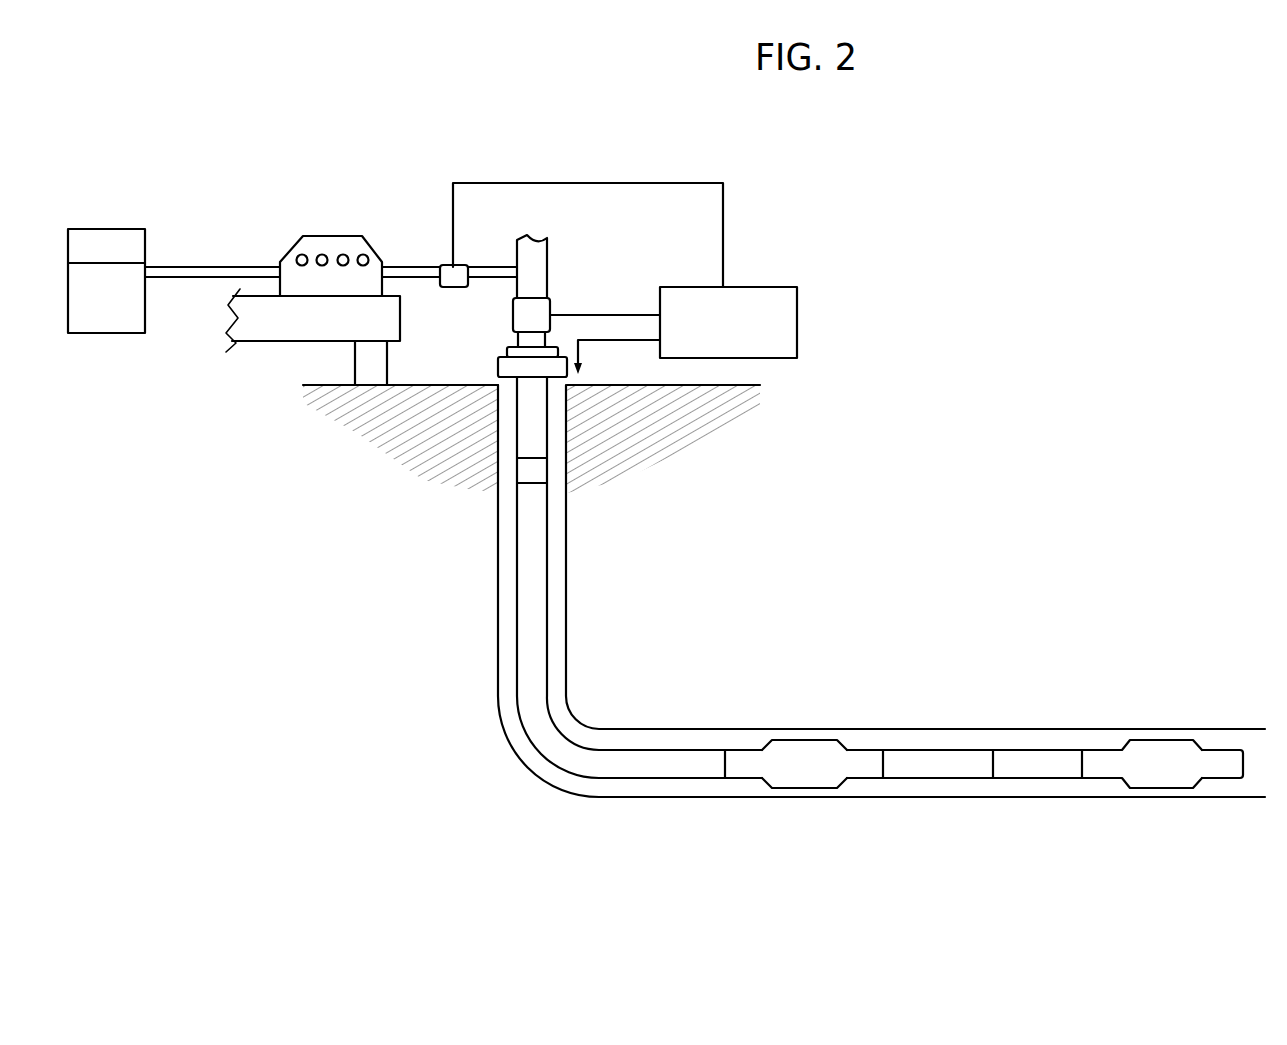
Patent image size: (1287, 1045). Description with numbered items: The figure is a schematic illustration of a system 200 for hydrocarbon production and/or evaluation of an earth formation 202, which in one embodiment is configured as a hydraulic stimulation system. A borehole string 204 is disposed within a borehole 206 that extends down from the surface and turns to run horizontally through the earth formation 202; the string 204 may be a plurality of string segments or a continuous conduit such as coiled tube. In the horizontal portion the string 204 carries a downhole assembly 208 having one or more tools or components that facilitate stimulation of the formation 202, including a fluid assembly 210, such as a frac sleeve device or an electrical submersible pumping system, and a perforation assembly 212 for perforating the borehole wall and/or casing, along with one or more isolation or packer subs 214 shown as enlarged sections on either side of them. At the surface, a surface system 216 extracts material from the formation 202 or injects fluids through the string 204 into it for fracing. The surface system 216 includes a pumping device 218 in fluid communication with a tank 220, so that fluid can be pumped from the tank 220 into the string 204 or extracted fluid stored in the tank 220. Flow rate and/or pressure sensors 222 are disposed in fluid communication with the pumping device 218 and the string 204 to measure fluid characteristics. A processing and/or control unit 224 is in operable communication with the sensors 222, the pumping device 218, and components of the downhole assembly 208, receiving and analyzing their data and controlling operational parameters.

The system 200 is at (1011, 336).
The earth formation 202 is at (420, 475).
The borehole string 204 is at (527, 615).
The borehole 206 is at (507, 698).
The downhole assembly 208 is at (1071, 697).
The fluid assembly 210 is at (925, 767).
The perforation assembly 212 is at (1020, 757).
The packer subs 214 is at (788, 752).
The surface system 216 is at (268, 190).
The pumping device 218 is at (352, 248).
The tank 220 is at (100, 313).
The flow rate and/or pressure sensors 222 is at (525, 313).
The processing and/or control unit 224 is at (751, 338).